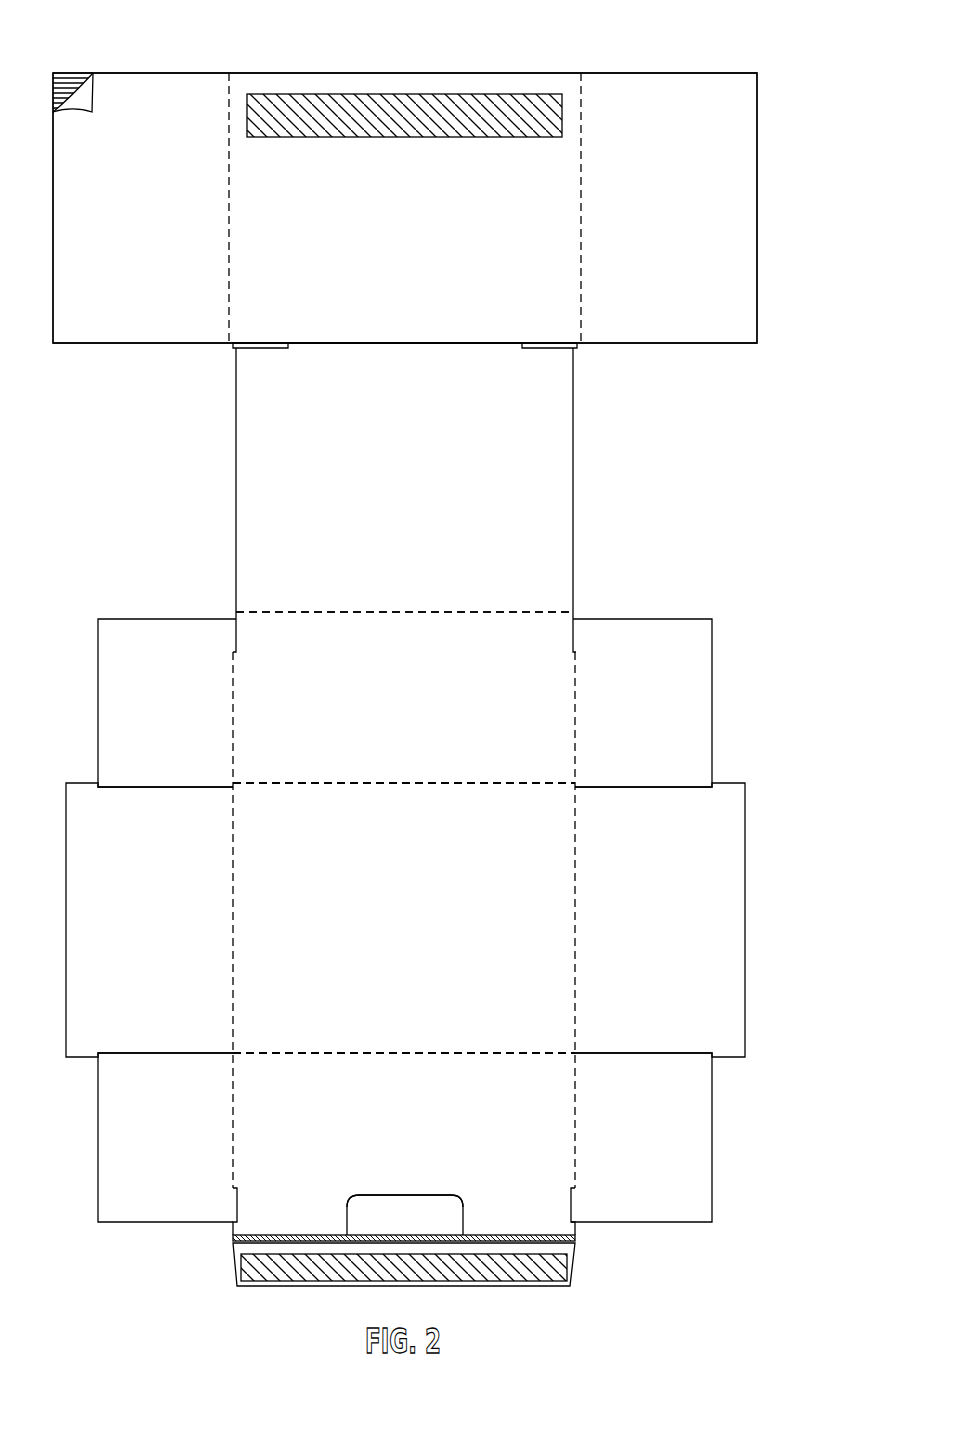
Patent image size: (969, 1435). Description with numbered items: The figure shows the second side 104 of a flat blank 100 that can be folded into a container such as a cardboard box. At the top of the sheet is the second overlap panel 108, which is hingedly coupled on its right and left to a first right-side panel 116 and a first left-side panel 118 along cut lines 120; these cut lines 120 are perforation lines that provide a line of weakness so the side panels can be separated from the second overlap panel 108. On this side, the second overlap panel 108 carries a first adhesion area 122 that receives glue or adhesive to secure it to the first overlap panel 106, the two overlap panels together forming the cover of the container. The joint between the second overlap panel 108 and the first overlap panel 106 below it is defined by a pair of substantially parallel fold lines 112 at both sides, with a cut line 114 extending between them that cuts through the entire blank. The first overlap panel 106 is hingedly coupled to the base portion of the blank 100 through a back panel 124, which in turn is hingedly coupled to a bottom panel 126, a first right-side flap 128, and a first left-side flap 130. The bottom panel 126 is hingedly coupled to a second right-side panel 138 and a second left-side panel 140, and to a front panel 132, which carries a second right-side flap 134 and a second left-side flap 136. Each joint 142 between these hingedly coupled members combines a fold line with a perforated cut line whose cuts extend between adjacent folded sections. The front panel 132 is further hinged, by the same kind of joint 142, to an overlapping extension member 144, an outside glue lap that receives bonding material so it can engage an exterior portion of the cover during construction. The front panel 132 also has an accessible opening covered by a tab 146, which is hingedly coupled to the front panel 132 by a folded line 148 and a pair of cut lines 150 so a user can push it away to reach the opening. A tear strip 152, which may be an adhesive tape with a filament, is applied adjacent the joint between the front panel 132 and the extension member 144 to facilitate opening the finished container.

The blank 100 is at (118, 18).
The second side 104 is at (686, 93).
The first overlap panel 106 is at (423, 491).
The second overlap panel 108 is at (423, 246).
The fold lines 112 is at (258, 343).
The cut line 114 is at (418, 343).
The first right-side panel 116 is at (158, 226).
The first left-side panel 118 is at (695, 226).
The cut lines 120 is at (229, 133).
The first adhesion area 122 is at (444, 103).
The back panel 124 is at (425, 706).
The bottom panel 126 is at (425, 914).
The first right-side flap 128 is at (182, 721).
The first left-side flap 130 is at (665, 721).
The front panel 132 is at (425, 1108).
The second right-side flap 134 is at (182, 1146).
The second left-side flap 136 is at (660, 1154).
The second right-side panel 138 is at (170, 934).
The second left-side panel 140 is at (680, 934).
The joint 142 is at (346, 612).
The overlapping extension member 144 is at (577, 1263).
The tab 146 is at (425, 1229).
The folded line 148 is at (404, 1195).
The cut lines 150 is at (352, 1200).
The tear strip 152 is at (544, 1248).